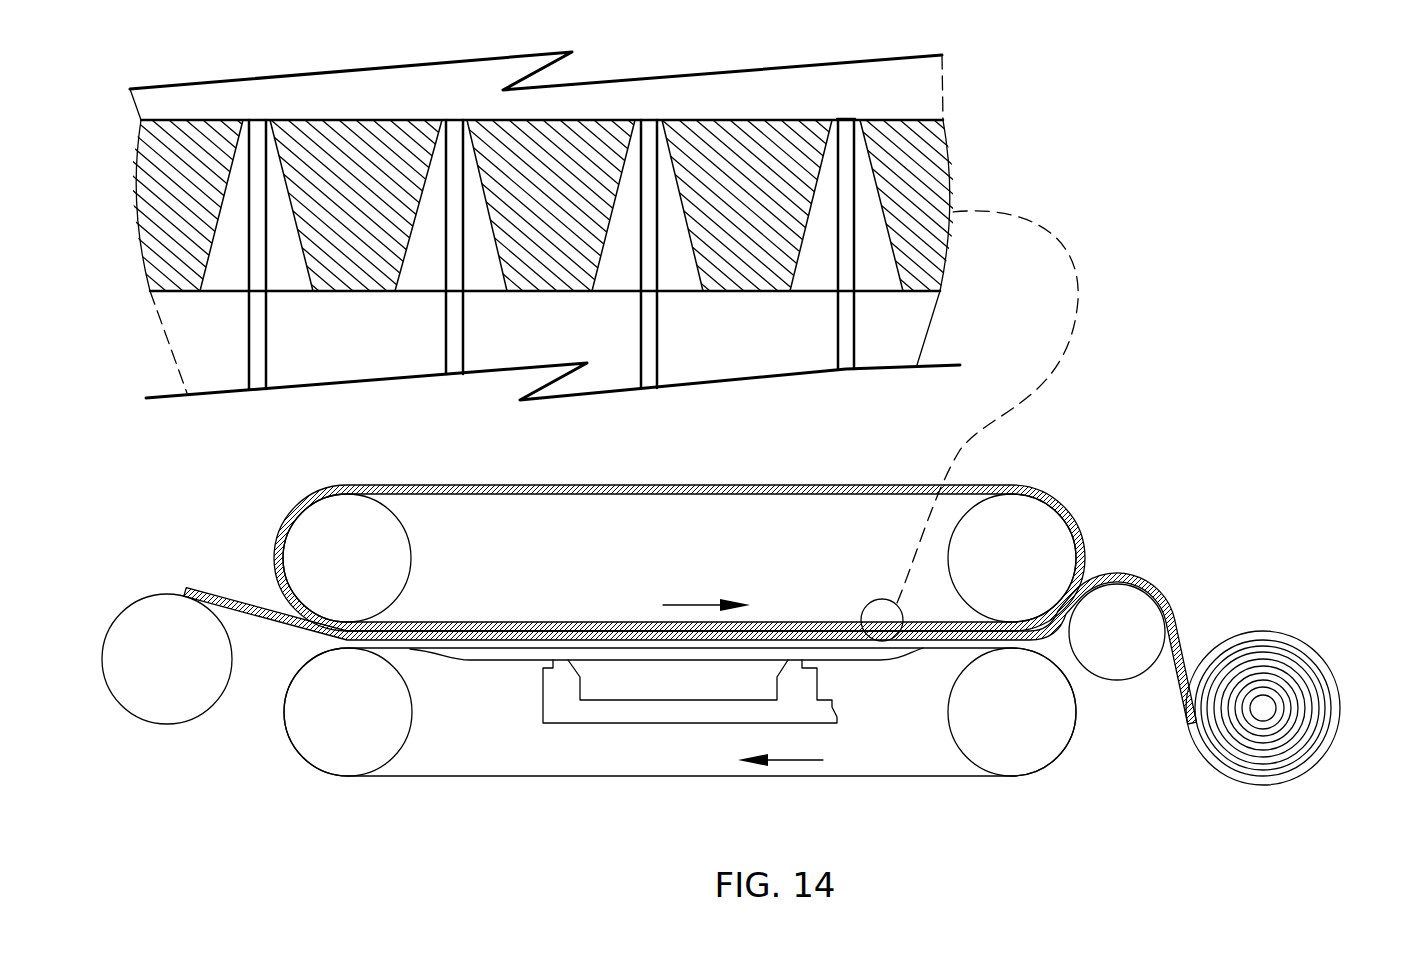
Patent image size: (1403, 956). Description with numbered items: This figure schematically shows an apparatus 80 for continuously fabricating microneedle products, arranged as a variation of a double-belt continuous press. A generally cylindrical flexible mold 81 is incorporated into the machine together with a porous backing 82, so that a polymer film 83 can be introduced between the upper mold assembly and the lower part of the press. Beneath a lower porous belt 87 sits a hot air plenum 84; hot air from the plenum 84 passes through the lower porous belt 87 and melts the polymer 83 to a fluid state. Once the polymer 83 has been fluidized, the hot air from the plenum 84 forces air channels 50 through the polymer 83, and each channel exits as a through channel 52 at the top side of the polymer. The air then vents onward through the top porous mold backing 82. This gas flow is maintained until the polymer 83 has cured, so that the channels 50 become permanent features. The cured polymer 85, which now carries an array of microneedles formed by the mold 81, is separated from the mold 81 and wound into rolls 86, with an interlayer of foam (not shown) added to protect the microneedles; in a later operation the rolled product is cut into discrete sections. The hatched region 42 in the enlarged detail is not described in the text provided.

The foam/adhesive layer (hatched) 42 is at (930, 153).
The air channels 50 is at (463, 383).
The through channel 52 is at (845, 118).
The apparatus 80 is at (125, 567).
The cylindrical flexible mold 81 is at (273, 563).
The porous backing 82 is at (525, 500).
The polymer film 83 is at (212, 605).
The hot air plenum 84 is at (670, 660).
The cured polymer 85 is at (1108, 578).
The rolls 86 is at (1265, 632).
The lower porous belt 87 is at (400, 647).